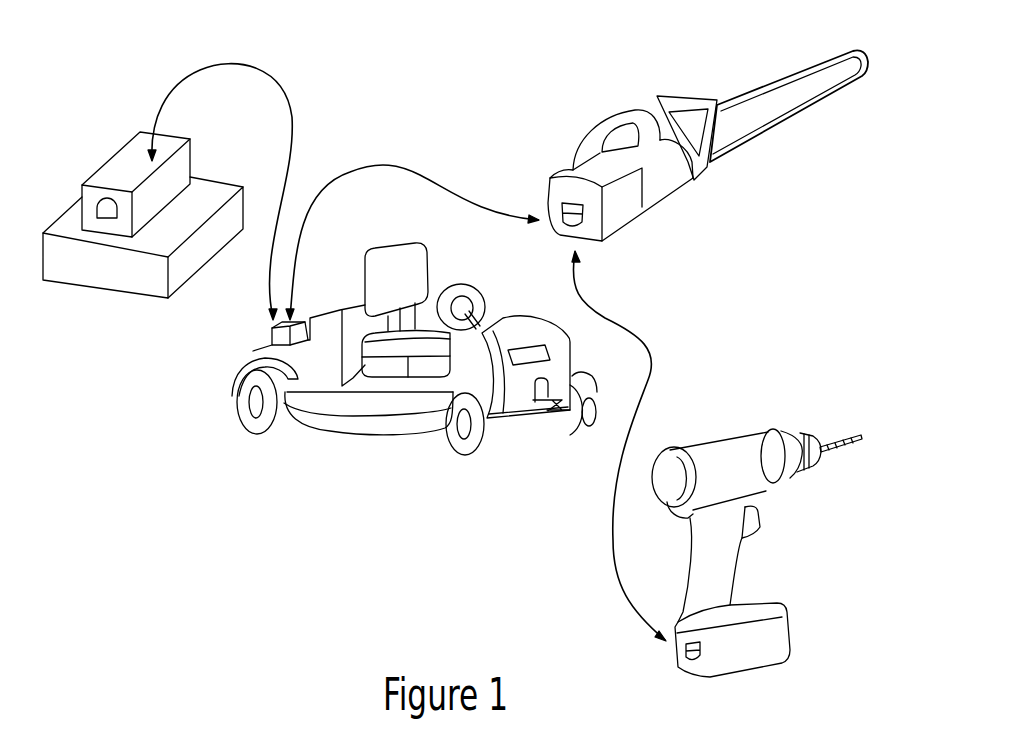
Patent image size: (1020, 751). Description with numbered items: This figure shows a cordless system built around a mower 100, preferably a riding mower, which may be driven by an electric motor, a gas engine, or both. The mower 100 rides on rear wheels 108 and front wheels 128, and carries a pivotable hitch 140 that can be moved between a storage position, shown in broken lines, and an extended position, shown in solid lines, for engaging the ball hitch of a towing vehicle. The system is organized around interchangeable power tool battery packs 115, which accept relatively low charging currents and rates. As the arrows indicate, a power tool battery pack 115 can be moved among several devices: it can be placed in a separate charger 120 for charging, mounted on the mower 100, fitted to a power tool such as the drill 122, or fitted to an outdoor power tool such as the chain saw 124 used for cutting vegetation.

The mower 100 is at (413, 374).
The rear wheels 108 is at (252, 423).
The power tool battery packs 115 is at (180, 168).
The charger 120 is at (108, 272).
The drill 122 is at (748, 480).
The chain saw 124 is at (678, 178).
The front wheels 128 is at (465, 448).
The pivotable hitch 140 is at (558, 401).